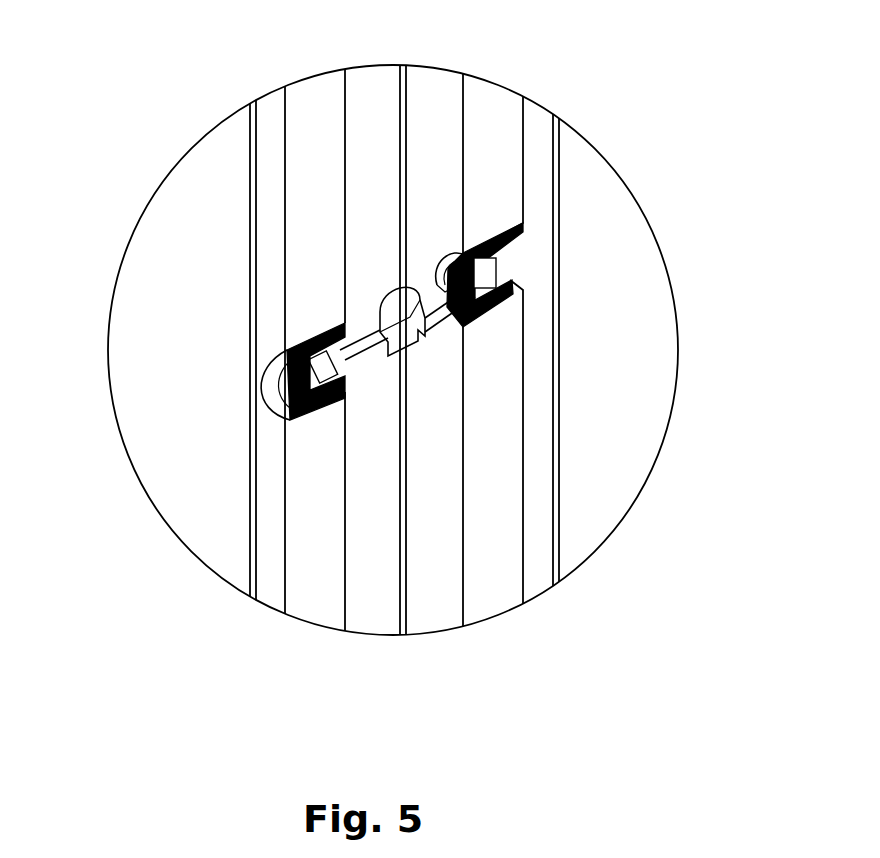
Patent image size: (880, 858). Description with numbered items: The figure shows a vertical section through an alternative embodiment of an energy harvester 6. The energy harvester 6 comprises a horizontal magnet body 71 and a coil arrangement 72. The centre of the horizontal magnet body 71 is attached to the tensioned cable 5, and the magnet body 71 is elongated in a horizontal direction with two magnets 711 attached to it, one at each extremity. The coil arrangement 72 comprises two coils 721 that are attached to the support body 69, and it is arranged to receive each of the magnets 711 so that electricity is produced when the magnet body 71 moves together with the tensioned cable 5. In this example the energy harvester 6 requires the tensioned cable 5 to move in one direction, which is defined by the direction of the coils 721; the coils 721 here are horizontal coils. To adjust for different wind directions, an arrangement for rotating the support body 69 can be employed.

The tensioned cable 5 is at (400, 583).
The energy harvester 6 is at (217, 402).
The support body 69 is at (312, 222).
The horizontal magnet body 71 is at (414, 290).
The magnets 711 is at (350, 332).
The coil arrangement 72 is at (223, 360).
The coils 721 is at (262, 362).